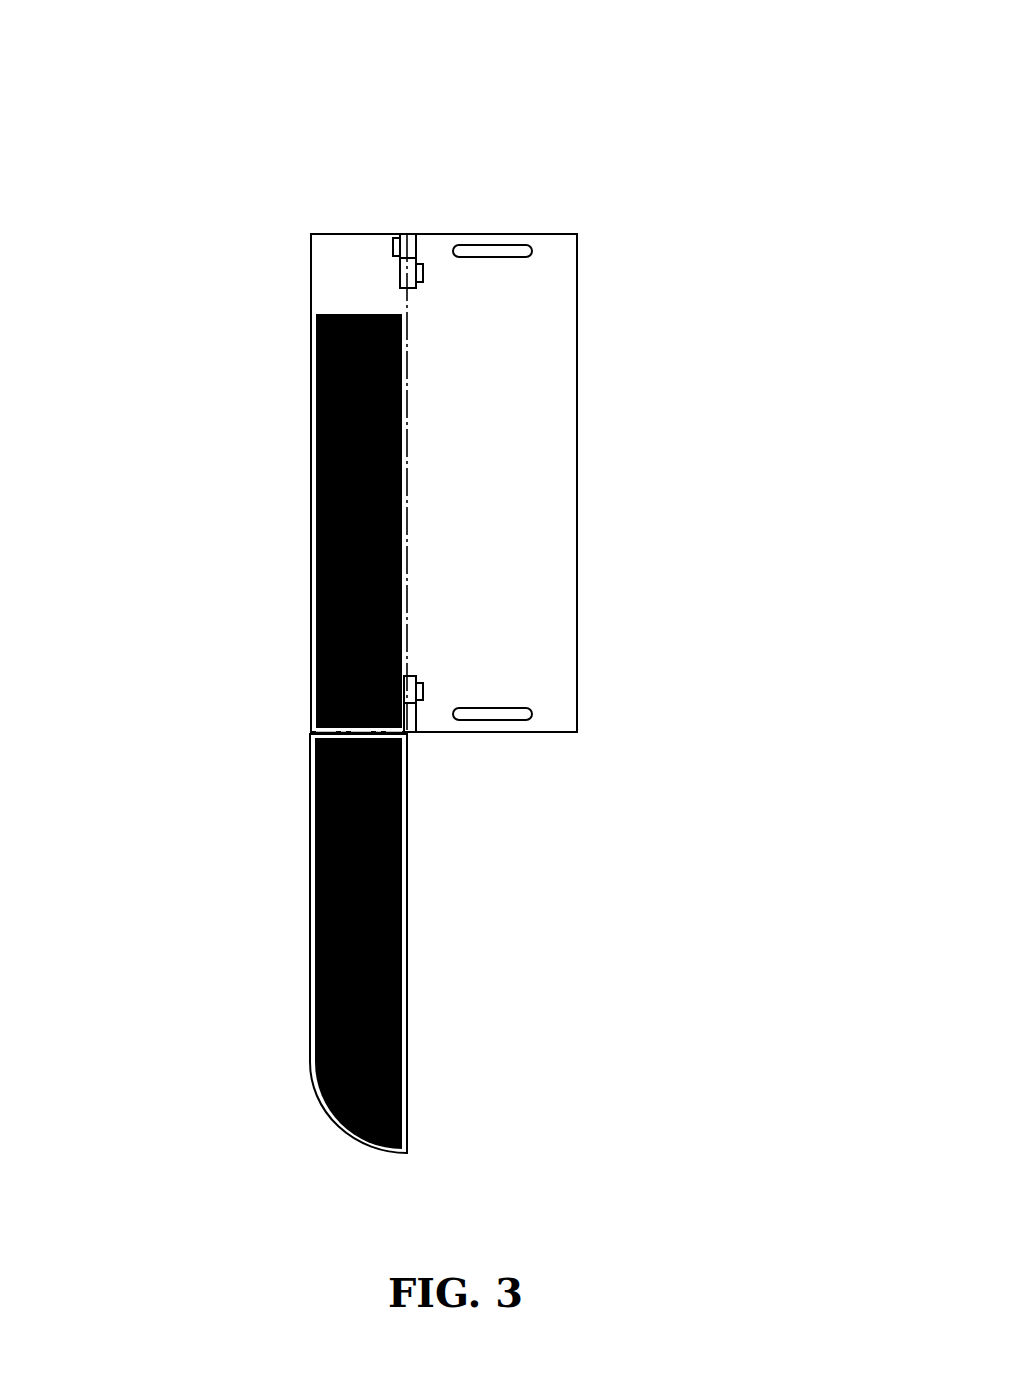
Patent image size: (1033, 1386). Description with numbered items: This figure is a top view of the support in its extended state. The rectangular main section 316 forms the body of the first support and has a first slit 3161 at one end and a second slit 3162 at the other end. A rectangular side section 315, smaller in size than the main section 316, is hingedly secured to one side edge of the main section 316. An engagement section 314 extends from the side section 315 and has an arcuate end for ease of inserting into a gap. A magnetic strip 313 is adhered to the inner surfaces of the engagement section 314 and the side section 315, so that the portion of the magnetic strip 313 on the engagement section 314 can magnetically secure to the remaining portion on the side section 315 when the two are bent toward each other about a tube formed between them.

The magnetic strip 313 is at (313, 490).
The engagement section 314 is at (287, 1008).
The side section 315 is at (340, 250).
The main section 316 is at (498, 520).
The first slit 3161 is at (497, 248).
The second slit 3162 is at (492, 720).